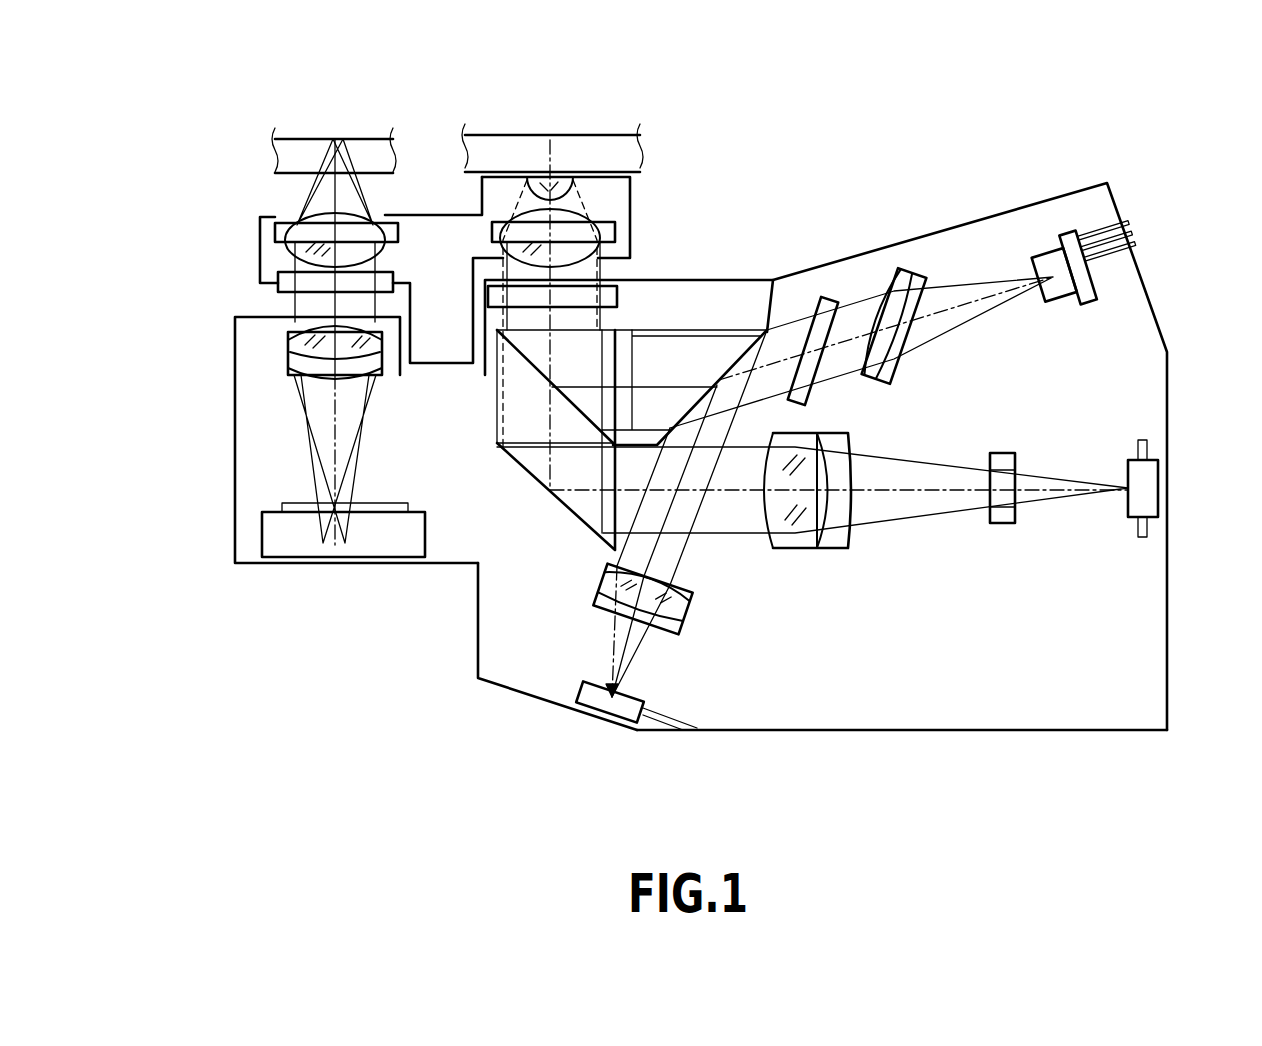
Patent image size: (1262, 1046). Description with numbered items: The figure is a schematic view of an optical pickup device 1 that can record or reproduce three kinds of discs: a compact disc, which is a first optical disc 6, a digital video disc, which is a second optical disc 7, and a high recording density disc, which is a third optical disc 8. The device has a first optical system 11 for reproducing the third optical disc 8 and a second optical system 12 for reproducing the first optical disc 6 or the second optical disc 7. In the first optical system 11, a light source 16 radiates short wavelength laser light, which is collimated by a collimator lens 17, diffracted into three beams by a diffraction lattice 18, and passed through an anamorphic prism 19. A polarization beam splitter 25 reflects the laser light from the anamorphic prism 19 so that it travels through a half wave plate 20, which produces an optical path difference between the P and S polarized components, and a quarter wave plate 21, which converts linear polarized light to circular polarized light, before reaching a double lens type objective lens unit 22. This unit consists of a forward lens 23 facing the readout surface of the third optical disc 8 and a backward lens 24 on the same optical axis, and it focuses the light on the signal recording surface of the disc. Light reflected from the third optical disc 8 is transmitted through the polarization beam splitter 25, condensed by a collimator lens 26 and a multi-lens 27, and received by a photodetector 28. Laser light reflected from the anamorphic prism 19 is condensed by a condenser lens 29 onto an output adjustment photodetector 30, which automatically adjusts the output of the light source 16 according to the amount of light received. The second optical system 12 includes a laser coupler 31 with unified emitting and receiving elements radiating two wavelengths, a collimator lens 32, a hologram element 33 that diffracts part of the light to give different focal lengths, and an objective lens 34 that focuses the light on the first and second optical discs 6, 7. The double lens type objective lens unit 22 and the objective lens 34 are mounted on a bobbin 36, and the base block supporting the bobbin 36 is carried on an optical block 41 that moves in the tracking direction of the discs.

The optical pickup device 1 is at (878, 136).
The first optical disc 6 is at (376, 150).
The second optical disc 7 is at (303, 150).
The third optical disc 8 is at (585, 150).
The first optical system 11 is at (808, 744).
The second optical system 12 is at (346, 600).
The light source 16 is at (1087, 297).
The collimator lens 17 is at (890, 290).
The diffraction lattice 18 is at (805, 318).
The anamorphic prism 19 is at (727, 360).
The half wave plate 20 is at (632, 345).
The quarter wave plate 21 is at (615, 297).
The double lens type objective lens unit 22 is at (617, 209).
The forward lens 23 is at (547, 177).
The backward lens 24 is at (495, 232).
The polarization beam splitter 25 is at (545, 472).
The collimator lens 26 is at (800, 548).
The multi-lens 27 is at (1007, 523).
The photodetector 28 is at (1150, 505).
The condenser lens 29 is at (600, 602).
The output adjustment photodetector 30 is at (625, 716).
The laser coupler 31 is at (290, 548).
The collimator lens 32 is at (362, 375).
The hologram element 33 is at (278, 282).
The objective lens 34 is at (283, 230).
The bobbin 36 is at (427, 225).
The optical block 41 is at (1045, 730).